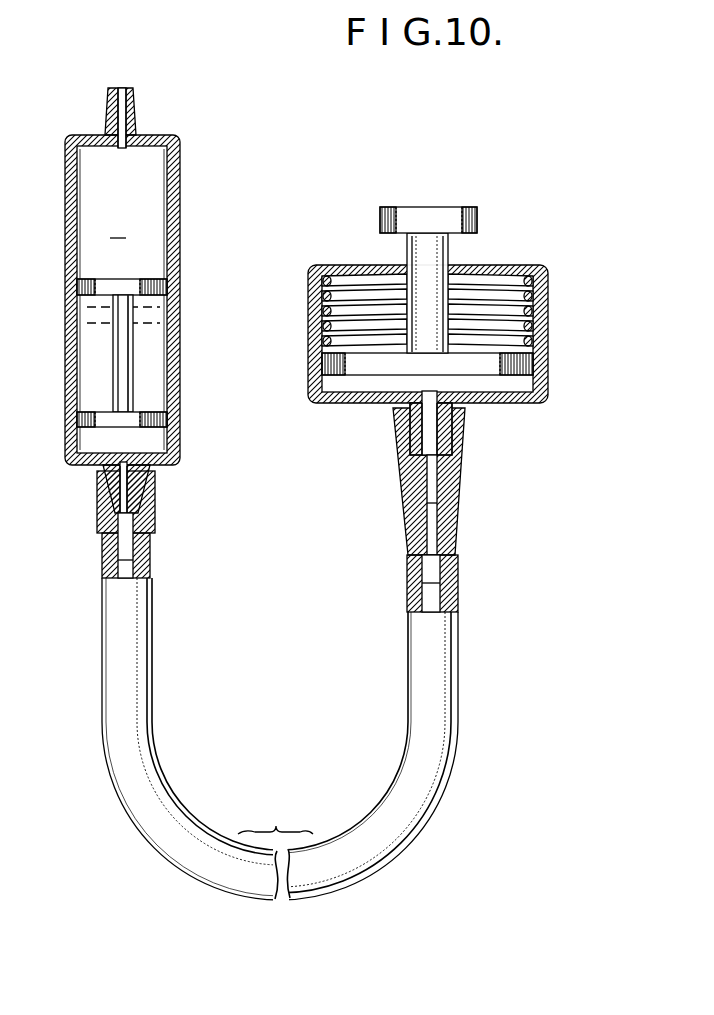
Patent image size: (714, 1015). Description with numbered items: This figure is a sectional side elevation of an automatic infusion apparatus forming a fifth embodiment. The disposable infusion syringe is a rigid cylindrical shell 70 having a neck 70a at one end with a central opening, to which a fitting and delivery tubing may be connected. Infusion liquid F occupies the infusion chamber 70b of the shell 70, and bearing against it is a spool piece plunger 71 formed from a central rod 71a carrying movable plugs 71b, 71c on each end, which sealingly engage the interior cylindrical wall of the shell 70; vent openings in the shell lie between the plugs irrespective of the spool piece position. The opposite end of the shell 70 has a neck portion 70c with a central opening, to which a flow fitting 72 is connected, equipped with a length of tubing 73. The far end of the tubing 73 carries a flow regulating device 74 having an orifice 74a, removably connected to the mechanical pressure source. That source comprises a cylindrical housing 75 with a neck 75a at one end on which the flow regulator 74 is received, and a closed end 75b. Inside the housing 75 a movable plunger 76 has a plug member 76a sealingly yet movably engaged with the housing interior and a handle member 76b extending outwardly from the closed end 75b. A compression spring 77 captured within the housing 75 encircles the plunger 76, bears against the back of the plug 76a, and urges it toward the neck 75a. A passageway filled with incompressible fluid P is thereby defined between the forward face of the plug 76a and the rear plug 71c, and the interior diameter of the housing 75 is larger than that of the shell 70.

The cylindrical shell 70 is at (125, 332).
The neck 70a is at (108, 103).
The infusion chamber 70b is at (95, 194).
The neck portion 70c is at (110, 489).
The spool piece plunger 71 is at (112, 364).
The central rod 71a is at (135, 388).
The movable plug 71b is at (160, 279).
The rear plug 71c is at (85, 425).
The flow fitting 72 is at (108, 520).
The tubing 73 is at (102, 568).
The flow regulating device 74 is at (456, 501).
The orifice 74a is at (430, 505).
The cylindrical housing 75 is at (449, 304).
The neck 75a is at (452, 433).
The closed end 75b is at (355, 266).
The movable plunger 76 is at (454, 264).
The plug member 76a is at (362, 375).
The handle member 76b is at (426, 215).
The compression spring 77 is at (533, 312).